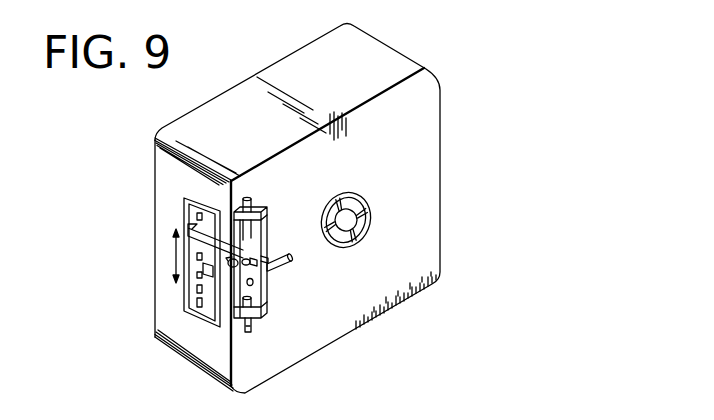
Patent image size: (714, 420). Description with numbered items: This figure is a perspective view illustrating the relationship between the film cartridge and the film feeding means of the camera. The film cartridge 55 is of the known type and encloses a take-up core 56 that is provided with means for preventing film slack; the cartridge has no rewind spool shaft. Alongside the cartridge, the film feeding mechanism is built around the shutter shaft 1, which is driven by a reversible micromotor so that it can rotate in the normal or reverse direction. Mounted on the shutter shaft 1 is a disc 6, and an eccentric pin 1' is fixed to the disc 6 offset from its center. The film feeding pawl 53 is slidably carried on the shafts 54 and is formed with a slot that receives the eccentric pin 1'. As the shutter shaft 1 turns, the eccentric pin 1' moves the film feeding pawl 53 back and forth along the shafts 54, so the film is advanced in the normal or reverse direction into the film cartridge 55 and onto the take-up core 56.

The film cartridge 55 is at (327, 332).
The take-up core 56 is at (343, 237).
The disc 6 is at (268, 284).
The shafts 54 is at (248, 332).
The film feeding pawl 53 is at (188, 231).
The shutter shaft 1 is at (292, 251).
The eccentric pin 1' is at (270, 238).